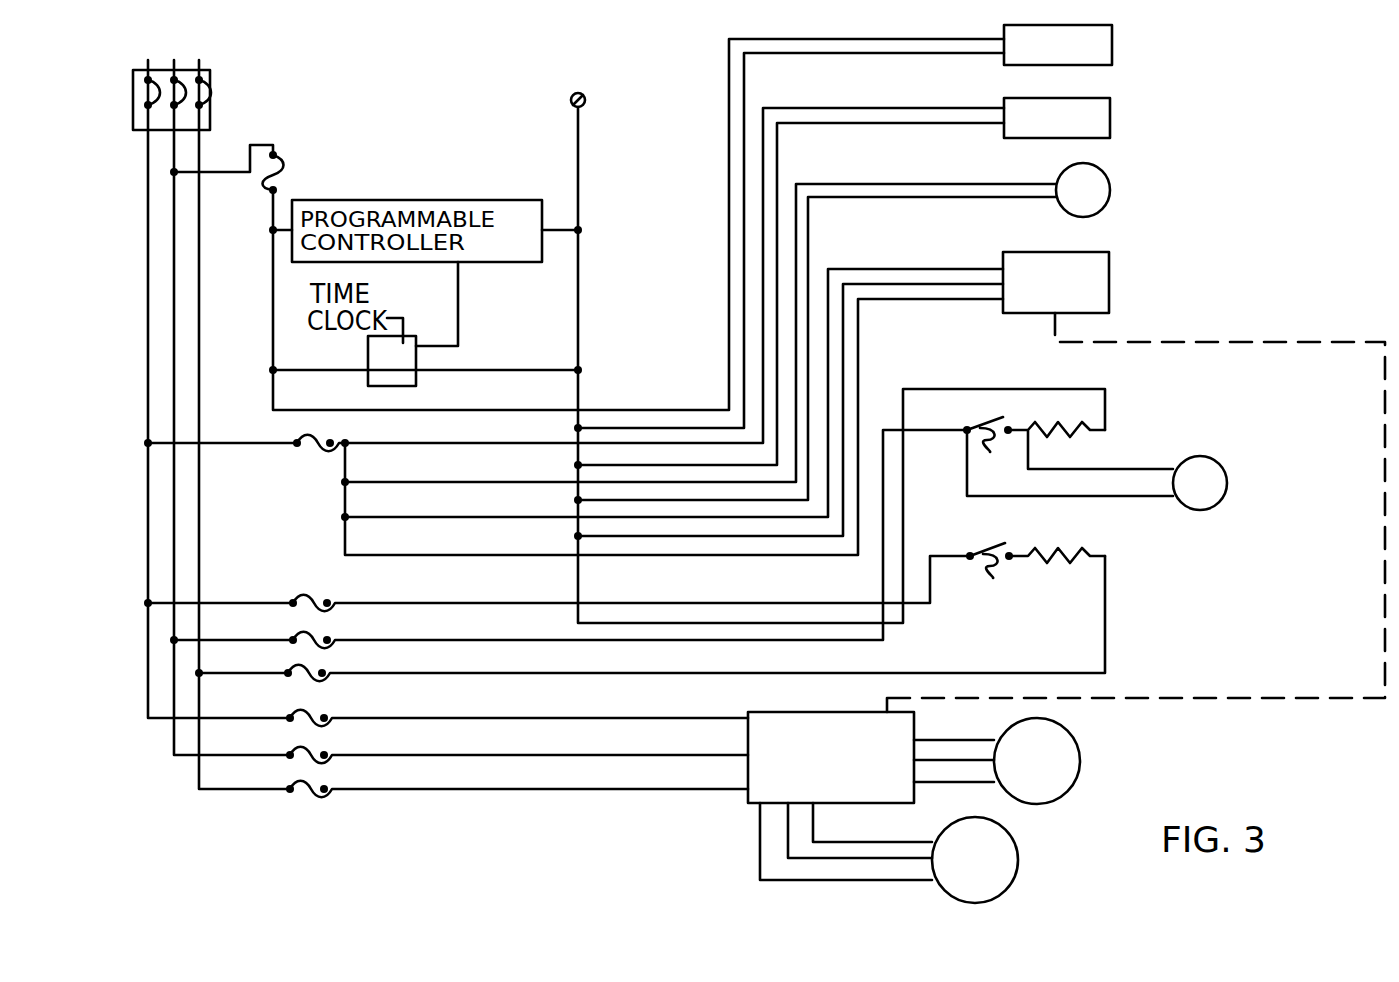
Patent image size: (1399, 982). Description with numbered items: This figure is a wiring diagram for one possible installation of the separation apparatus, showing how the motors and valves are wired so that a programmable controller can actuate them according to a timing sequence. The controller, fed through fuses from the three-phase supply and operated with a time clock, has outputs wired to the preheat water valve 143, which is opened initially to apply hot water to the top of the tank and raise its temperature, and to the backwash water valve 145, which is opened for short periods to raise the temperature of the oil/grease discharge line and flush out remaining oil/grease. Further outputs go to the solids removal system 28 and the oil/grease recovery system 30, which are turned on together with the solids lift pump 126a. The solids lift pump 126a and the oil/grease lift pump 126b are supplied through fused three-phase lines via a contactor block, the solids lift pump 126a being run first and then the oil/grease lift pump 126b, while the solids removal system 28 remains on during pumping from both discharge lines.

The backwash water valve 145 is at (1058, 45).
The preheat water valve 143 is at (1057, 118).
The solids removal system 28 is at (1083, 190).
The oil/grease recovery system 30 is at (1200, 483).
The solids lift pump 126a is at (1037, 761).
The oil/grease lift pump 126b is at (975, 860).